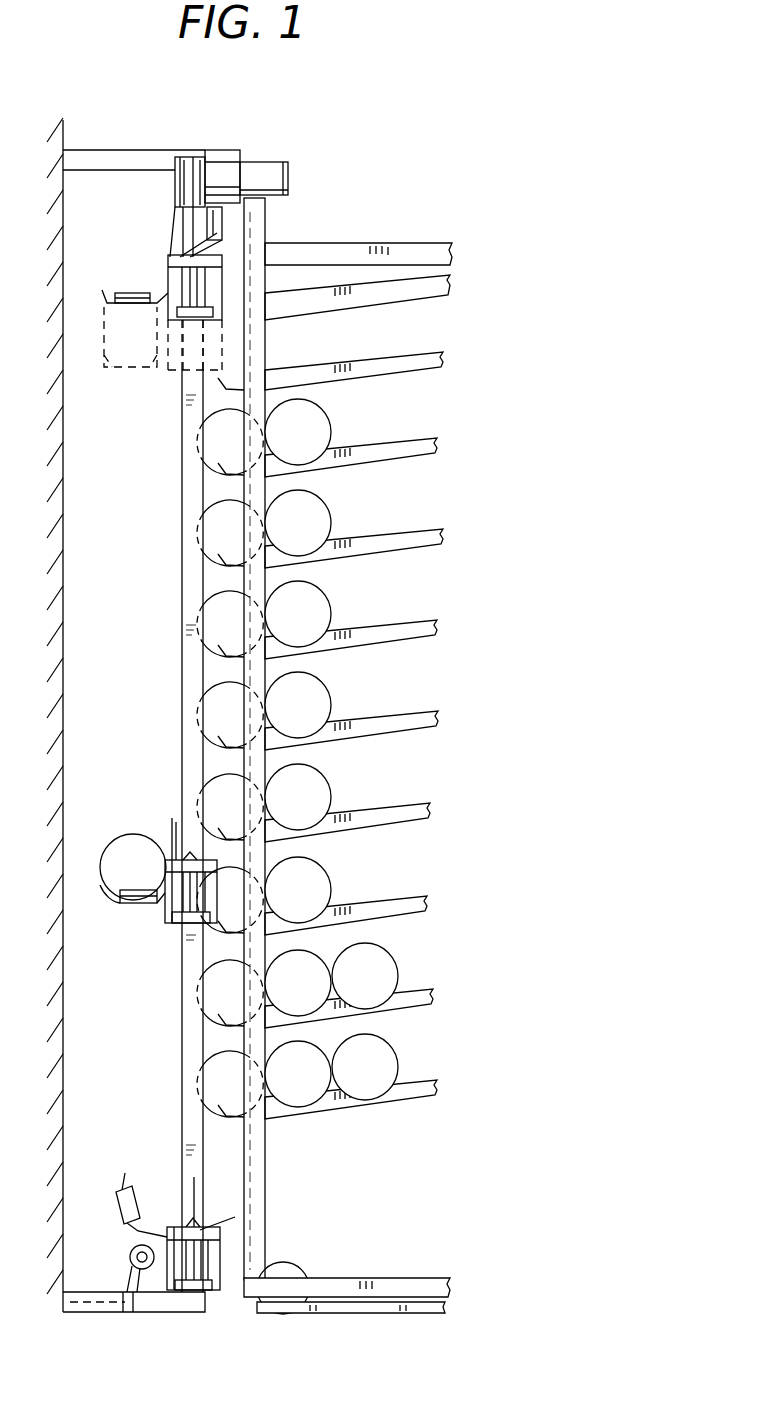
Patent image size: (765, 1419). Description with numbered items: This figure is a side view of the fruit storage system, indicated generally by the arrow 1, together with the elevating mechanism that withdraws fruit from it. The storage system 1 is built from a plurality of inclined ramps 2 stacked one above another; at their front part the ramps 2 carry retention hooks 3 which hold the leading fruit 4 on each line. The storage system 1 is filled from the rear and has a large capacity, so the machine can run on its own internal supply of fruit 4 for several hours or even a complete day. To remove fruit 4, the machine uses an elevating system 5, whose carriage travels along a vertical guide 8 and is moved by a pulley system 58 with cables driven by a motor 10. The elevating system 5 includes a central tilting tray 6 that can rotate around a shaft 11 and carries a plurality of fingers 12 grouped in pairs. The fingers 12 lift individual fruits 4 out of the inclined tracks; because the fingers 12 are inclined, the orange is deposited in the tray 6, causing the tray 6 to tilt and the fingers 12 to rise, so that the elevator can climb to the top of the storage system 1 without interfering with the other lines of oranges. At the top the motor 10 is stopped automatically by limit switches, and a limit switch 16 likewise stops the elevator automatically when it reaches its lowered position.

The storage system 1 is at (425, 502).
The inclined ramps 2 is at (420, 437).
The retention hooks 3 is at (233, 563).
The fruit 4 is at (323, 697).
The elevating system 5 is at (165, 1190).
The central tilting tray 6 is at (135, 905).
The vertical guide 8 is at (183, 638).
The motor 10 is at (280, 168).
The shaft 11 is at (165, 862).
The fingers 12 is at (172, 818).
The limit switch 16 is at (130, 1253).
The pulley system 58 is at (186, 160).